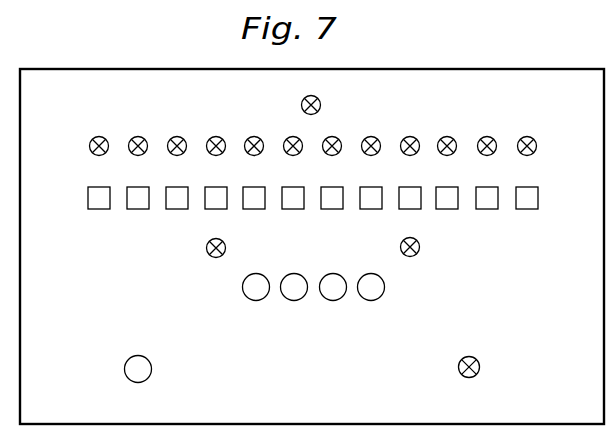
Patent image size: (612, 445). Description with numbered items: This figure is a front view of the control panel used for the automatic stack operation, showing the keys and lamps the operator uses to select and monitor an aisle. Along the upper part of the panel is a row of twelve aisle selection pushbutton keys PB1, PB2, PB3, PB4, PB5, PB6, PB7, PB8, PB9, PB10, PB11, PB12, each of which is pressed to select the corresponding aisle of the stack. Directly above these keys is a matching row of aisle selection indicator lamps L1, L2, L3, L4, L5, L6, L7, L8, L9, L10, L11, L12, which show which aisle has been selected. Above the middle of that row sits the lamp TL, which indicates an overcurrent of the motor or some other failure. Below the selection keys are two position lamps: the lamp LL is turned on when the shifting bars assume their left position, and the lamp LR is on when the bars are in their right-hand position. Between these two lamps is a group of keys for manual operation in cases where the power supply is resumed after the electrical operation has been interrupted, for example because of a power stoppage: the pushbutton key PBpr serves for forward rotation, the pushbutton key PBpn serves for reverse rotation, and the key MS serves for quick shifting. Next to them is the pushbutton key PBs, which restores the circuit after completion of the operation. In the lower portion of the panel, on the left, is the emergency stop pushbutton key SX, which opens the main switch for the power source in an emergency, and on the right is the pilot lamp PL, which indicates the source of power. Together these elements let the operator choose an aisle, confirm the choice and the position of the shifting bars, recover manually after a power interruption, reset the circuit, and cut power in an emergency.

The failure indicator lamp TL is at (311, 97).
The aisle selection indicator lamp L1 is at (99, 137).
The aisle selection indicator lamp L2 is at (138, 137).
The aisle selection indicator lamp L3 is at (177, 137).
The aisle selection indicator lamp L4 is at (216, 137).
The aisle selection indicator lamp L5 is at (254, 137).
The aisle selection indicator lamp L6 is at (293, 137).
The aisle selection indicator lamp L7 is at (332, 137).
The aisle selection indicator lamp L8 is at (371, 137).
The aisle selection indicator lamp L9 is at (410, 137).
The aisle selection indicator lamp L10 is at (447, 137).
The aisle selection indicator lamp L11 is at (487, 137).
The aisle selection indicator lamp L12 is at (527, 137).
The aisle selection pushbutton key PB1 is at (99, 190).
The aisle selection pushbutton key PB2 is at (138, 190).
The aisle selection pushbutton key PB3 is at (177, 190).
The aisle selection pushbutton key PB4 is at (216, 190).
The aisle selection pushbutton key PB5 is at (254, 190).
The aisle selection pushbutton key PB6 is at (293, 190).
The aisle selection pushbutton key PB7 is at (332, 190).
The aisle selection pushbutton key PB8 is at (371, 190).
The aisle selection pushbutton key PB9 is at (410, 190).
The aisle selection pushbutton key PB10 is at (447, 190).
The aisle selection pushbutton key PB11 is at (487, 190).
The aisle selection pushbutton key PB12 is at (527, 190).
The left position indicator lamp LL is at (201, 248).
The right position indicator lamp LR is at (424, 247).
The forward rotation pushbutton key PBpr is at (257, 279).
The reverse rotation pushbutton key PBpn is at (294, 279).
The quick shifting pushbutton key MS is at (333, 279).
The circuit restoring pushbutton key PBs is at (371, 279).
The emergency stop pushbutton key SX is at (138, 361).
The pilot lamp PL is at (469, 357).